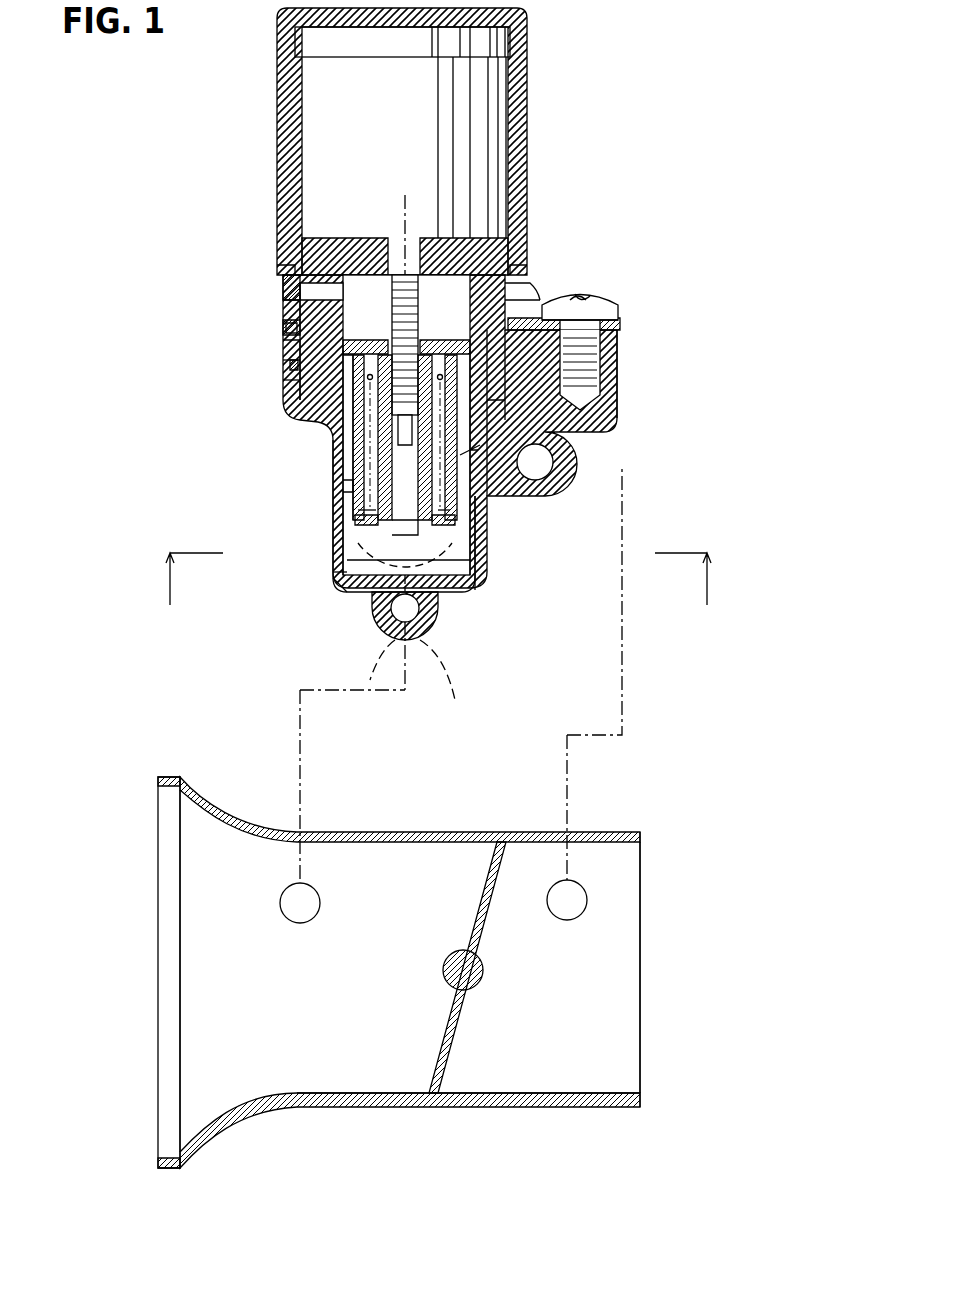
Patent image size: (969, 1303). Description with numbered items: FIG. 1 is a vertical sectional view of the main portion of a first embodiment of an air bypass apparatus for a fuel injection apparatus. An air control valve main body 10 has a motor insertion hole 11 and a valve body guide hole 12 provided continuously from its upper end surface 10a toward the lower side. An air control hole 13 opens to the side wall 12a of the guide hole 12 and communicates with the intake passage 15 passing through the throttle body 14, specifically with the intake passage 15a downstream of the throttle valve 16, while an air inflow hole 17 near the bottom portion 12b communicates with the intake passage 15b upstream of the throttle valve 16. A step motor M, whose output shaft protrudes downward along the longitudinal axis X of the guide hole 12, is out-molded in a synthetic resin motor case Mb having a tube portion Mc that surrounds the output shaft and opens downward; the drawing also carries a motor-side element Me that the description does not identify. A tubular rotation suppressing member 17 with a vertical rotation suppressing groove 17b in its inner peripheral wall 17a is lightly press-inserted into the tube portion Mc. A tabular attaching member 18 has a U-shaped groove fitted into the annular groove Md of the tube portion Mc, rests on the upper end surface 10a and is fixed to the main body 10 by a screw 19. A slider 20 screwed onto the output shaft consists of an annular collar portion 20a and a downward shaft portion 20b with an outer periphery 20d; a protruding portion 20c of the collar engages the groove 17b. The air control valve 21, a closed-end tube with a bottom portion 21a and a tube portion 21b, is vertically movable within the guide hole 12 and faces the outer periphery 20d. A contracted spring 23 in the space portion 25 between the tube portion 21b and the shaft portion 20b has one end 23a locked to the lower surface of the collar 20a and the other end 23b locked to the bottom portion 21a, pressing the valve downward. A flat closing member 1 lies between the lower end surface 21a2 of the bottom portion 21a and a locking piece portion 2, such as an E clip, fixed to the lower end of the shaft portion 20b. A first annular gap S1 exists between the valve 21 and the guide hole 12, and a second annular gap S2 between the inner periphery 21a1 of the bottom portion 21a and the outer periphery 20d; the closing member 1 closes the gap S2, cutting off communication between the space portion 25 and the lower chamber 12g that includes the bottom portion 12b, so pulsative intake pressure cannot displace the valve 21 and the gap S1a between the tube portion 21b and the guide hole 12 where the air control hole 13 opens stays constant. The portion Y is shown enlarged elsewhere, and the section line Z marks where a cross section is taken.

The motor M is at (378, 97).
The motor case Mb is at (527, 110).
The tube portion Mc is at (298, 298).
The annular groove Md is at (283, 326).
The motor output shaft Me is at (440, 300).
The longitudinal axis X is at (420, 440).
The portion Y is at (427, 654).
The section line Z is at (436, 600).
The rotation suppressing member 17 is at (285, 290).
The inner peripheral wall 17a is at (522, 290).
The rotation suppressing groove 17b is at (525, 305).
The space portion 25 is at (578, 282).
The screw 19 is at (605, 302).
The attaching member 18 is at (615, 324).
The air control valve main body 10 is at (617, 382).
The upper end surface 10a is at (620, 342).
The slider 20 is at (283, 400).
The annular collar portion 20a is at (372, 328).
The shaft portion 20b is at (157, 381).
The protruding portion 20c is at (525, 375).
The outer periphery 20d is at (157, 405).
The spring 23 is at (283, 330).
The one end 23a is at (197, 345).
The other end 23b is at (343, 487).
The motor insertion hole 11 is at (290, 370).
The air control valve 21 is at (333, 452).
The bottom portion 21a is at (355, 522).
The inner periphery 21a1 is at (350, 508).
The lower end surface 21a2 is at (460, 522).
The tube portion 21b is at (221, 437).
The air control hole 13 is at (553, 466).
The first annular gap S1 is at (335, 565).
The gap S1a is at (492, 461).
The second annular gap S2 is at (340, 557).
The closing member 1 is at (458, 532).
The locking piece portion 2 is at (455, 545).
The valve body guide hole 12 is at (560, 568).
The side wall 12a is at (478, 483).
The bottom portion 12b is at (345, 597).
The lower chamber 12g is at (438, 600).
The throttle valve 16 is at (475, 905).
The intake passage 15 is at (620, 980).
The intake passage downstream side 15a is at (707, 967).
The intake passage upstream side 15b is at (222, 993).
The throttle body 14 is at (378, 1108).